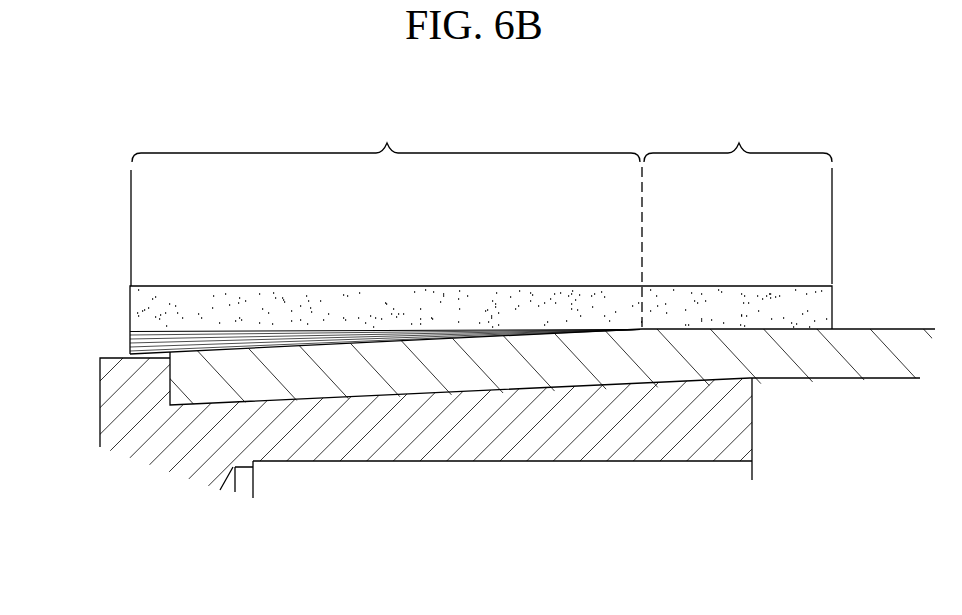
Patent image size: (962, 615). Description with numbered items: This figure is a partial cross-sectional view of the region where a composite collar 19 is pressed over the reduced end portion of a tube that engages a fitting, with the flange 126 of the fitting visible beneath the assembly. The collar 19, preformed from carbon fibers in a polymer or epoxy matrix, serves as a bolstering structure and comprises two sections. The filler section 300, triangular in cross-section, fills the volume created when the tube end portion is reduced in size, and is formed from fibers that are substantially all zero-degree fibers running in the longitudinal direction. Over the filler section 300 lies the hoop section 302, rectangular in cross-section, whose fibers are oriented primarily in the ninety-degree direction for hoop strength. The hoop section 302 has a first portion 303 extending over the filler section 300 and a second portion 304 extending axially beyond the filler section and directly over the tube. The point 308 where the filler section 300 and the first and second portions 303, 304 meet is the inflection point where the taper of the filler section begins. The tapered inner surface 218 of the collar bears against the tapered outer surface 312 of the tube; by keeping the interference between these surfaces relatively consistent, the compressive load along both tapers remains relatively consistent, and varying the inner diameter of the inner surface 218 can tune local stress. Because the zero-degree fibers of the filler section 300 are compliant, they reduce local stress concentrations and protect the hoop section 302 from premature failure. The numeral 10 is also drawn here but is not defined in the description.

The collar 19 is at (146, 260).
The substrate 10 is at (208, 383).
The hoop section 302 is at (263, 303).
The first portion 303 is at (388, 143).
The second portion 304 is at (739, 145).
The point 308 is at (642, 329).
The filler section 300 is at (143, 342).
The flange 126 is at (117, 383).
The tapered outer surface 312 is at (335, 347).
The inner surface 218 is at (384, 345).